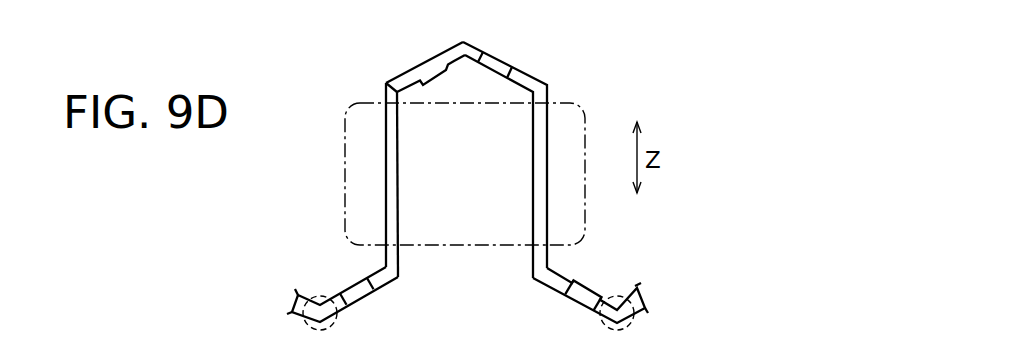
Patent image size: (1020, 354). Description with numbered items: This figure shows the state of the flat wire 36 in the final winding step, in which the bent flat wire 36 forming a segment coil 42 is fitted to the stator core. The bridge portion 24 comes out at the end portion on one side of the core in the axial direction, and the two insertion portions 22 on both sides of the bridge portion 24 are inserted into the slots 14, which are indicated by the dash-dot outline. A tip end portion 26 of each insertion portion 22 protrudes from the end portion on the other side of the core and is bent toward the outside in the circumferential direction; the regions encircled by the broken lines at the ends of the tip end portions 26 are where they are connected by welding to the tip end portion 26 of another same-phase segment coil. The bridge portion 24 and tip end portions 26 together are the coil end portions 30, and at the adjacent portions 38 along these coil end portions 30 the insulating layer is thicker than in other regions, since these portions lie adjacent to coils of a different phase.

The slot 14 is at (552, 180).
The insertion portion 22 is at (399, 186).
The bridge portion 24 is at (403, 74).
The tip end portion 26 is at (387, 284).
The coil end portion 30 is at (384, 172).
The flat wire 36 is at (515, 183).
The adjacent portion 38 is at (503, 60).
The segment coil 42 is at (515, 183).